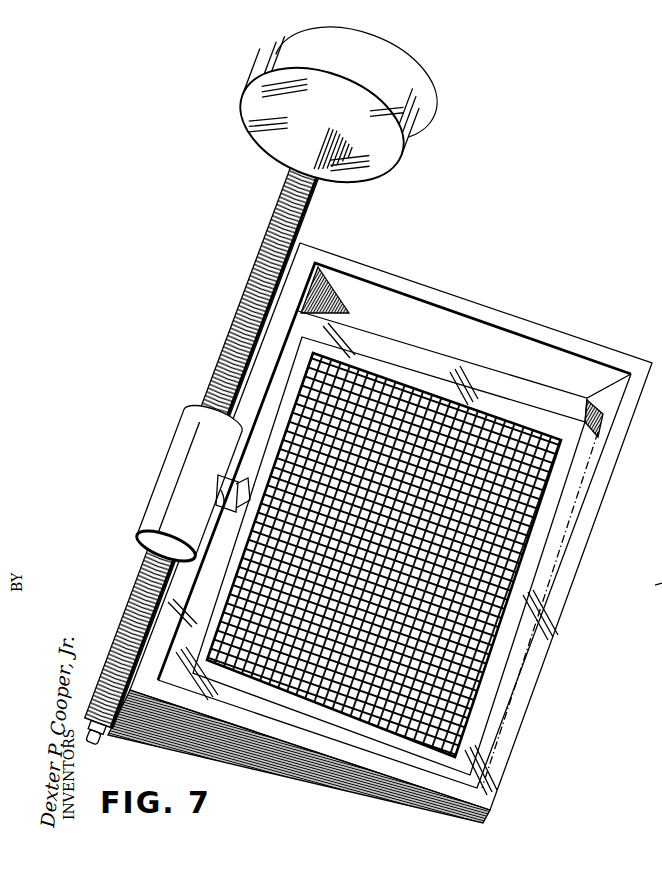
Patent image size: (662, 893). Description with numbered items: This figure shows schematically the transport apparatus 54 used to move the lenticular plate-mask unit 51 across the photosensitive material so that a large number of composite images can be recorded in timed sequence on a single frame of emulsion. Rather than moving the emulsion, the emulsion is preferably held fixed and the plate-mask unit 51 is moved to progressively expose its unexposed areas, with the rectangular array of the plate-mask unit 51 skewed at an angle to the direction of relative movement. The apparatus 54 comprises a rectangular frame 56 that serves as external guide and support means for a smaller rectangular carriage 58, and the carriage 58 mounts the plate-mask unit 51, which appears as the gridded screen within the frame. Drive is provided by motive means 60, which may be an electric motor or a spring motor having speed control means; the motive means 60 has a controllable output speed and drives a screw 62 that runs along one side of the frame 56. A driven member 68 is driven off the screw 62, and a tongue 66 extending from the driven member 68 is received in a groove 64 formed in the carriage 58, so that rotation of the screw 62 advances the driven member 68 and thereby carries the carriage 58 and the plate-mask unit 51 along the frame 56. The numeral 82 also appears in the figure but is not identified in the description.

The lenticular plate-mask unit 51 is at (477, 664).
The transport apparatus 54 is at (451, 268).
The rectangular frame 56 is at (480, 313).
The rectangular carriage 58 is at (527, 410).
The motive means 60 is at (417, 82).
The screw 62 is at (282, 212).
The groove 64 is at (240, 452).
The tongue 66 is at (215, 512).
The driven member 68 is at (181, 494).
The support 82 is at (660, 584).